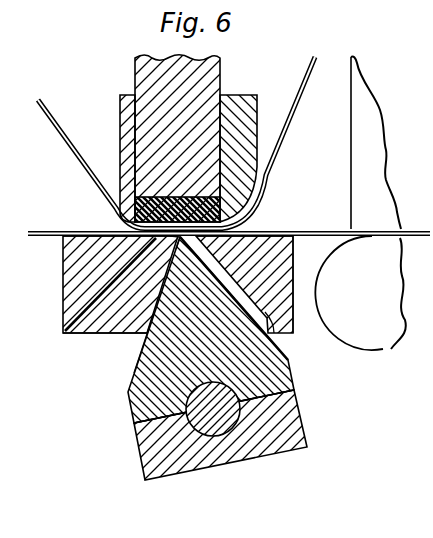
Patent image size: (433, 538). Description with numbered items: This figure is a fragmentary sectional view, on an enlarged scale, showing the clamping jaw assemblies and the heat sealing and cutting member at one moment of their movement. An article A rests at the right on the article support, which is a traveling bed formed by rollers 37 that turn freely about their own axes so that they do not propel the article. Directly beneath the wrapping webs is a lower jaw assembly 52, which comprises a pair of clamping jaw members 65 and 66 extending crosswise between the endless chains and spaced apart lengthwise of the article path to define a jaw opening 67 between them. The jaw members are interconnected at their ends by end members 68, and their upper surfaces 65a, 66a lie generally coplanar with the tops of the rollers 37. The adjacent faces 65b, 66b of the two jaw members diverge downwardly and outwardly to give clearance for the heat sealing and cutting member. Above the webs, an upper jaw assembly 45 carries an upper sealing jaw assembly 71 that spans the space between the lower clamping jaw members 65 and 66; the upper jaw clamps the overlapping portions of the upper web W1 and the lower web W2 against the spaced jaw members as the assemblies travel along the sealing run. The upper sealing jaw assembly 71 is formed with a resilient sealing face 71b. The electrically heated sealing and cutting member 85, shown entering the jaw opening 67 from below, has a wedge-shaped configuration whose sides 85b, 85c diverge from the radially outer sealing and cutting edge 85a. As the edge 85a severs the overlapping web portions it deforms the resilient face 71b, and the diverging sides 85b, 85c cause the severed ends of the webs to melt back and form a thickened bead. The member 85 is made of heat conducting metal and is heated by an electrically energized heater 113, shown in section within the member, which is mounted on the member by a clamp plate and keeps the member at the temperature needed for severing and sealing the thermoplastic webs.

The upper sealing jaw assembly 71 is at (153, 68).
The resilient sealing face 71b is at (175, 196).
The upper jaw assembly 45 is at (221, 72).
The upper web W1 is at (56, 122).
The lower web W2 is at (38, 237).
The article A is at (350, 137).
The roller 37 is at (380, 330).
The lower jaw assembly 52 is at (293, 292).
The clamping jaw member 66 is at (77, 292).
The upper surface 66a is at (88, 226).
The adjacent face 66b is at (118, 276).
The jaw opening 67 is at (155, 238).
The end member 68 is at (88, 323).
The clamping jaw member 65 is at (278, 261).
The upper surface 65a is at (268, 226).
The adjacent face 65b is at (271, 335).
The heat sealing and cutting member 85 is at (133, 379).
The sealing and cutting edge 85a is at (181, 240).
The side of sealing and cutting member 85b is at (150, 337).
The side of sealing and cutting member 85c is at (246, 319).
The heater 113 is at (221, 421).